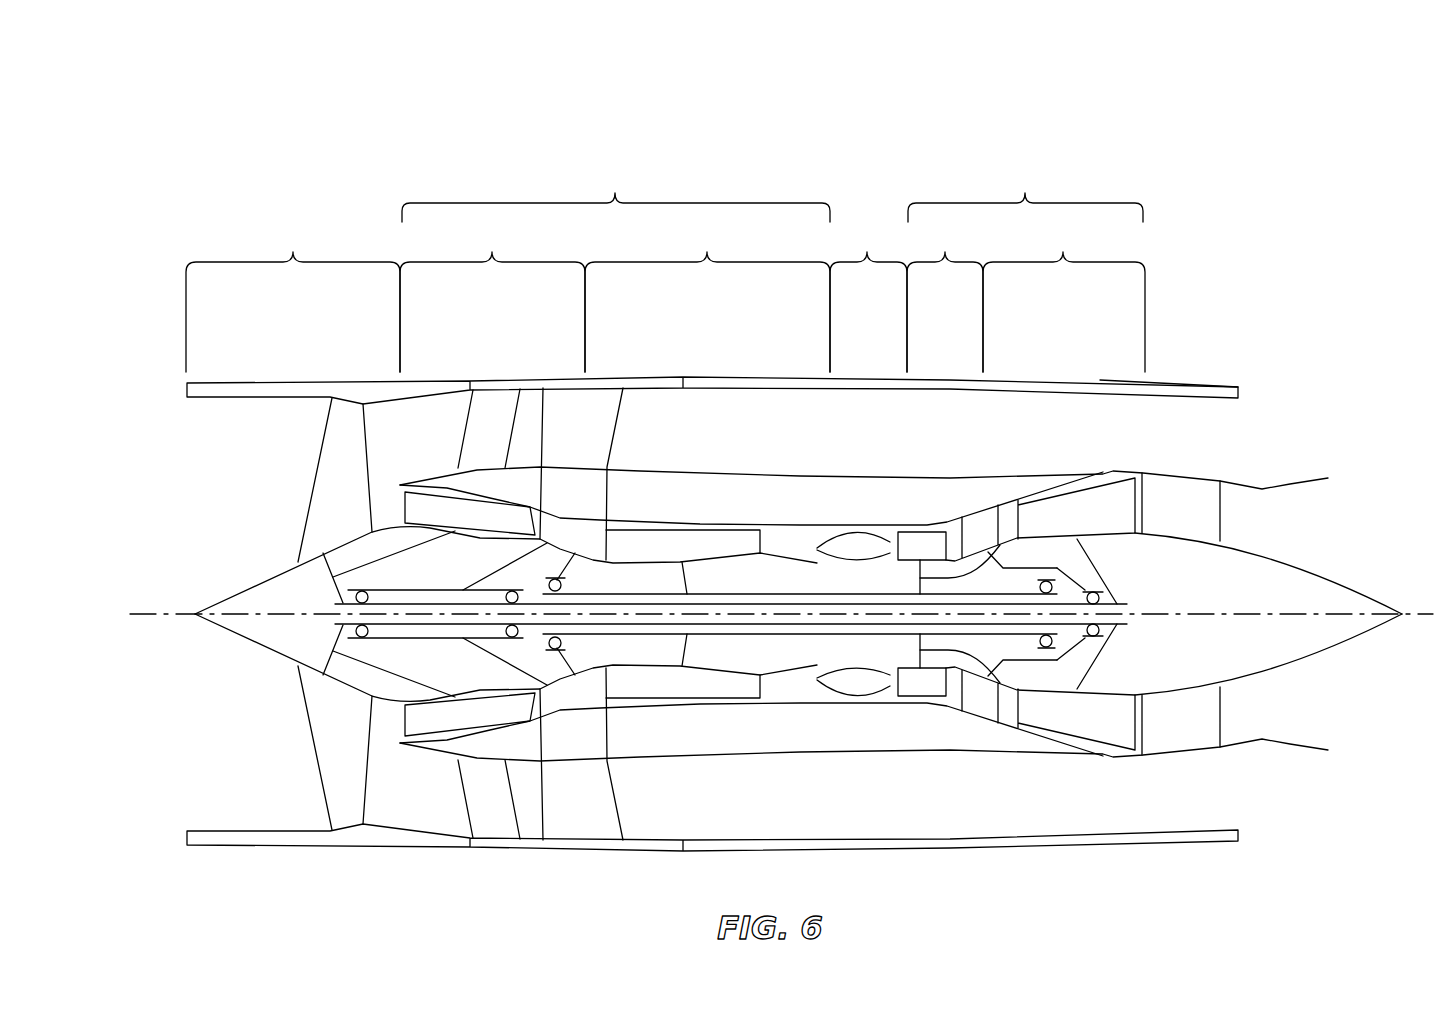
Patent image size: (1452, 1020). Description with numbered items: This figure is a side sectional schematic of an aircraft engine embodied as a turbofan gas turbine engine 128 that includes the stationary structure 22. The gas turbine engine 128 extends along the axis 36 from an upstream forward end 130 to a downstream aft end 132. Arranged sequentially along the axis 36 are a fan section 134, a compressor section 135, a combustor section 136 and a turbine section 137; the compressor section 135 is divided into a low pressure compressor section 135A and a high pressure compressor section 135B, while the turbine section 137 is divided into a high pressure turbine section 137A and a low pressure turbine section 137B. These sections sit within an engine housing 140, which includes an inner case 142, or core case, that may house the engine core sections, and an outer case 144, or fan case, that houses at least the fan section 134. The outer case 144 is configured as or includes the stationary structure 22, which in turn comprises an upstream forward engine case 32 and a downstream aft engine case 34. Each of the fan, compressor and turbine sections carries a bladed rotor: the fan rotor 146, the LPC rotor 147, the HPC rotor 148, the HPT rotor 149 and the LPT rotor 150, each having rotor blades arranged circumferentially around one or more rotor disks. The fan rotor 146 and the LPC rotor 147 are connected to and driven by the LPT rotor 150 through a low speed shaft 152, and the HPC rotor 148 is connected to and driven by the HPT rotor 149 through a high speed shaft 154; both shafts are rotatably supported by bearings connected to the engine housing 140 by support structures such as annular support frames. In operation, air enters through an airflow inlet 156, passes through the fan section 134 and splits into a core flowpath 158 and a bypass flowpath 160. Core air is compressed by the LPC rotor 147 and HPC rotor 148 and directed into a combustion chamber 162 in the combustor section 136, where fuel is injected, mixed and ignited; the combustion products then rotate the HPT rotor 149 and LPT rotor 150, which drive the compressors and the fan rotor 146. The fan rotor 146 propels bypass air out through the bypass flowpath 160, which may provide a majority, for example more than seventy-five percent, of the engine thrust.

The turbofan gas turbine engine 128 is at (1297, 136).
The forward end 130 is at (185, 391).
The aft end 132 is at (1402, 613).
The fan section 134 is at (293, 296).
The compressor section 135 is at (616, 194).
The low pressure compressor section 135A is at (492, 296).
The high pressure compressor section 135B is at (707, 296).
The combustor section 136 is at (868, 299).
The turbine section 137 is at (1025, 193).
The high pressure turbine section 137A is at (945, 299).
The low pressure turbine section 137B is at (1064, 297).
The engine housing 140 is at (1177, 347).
The stationary structure 22 is at (1198, 339).
The outer case 144 is at (1215, 382).
The inner case 142 is at (868, 470).
The fan rotor 146 is at (297, 522).
The LPC rotor 147 is at (403, 549).
The HPC rotor 148 is at (688, 580).
The HPT rotor 149 is at (985, 552).
The LPT rotor 150 is at (1083, 574).
The low speed shaft 152 is at (728, 626).
The high speed shaft 154 is at (803, 638).
The airflow inlet 156 is at (185, 468).
The core flowpath 158 is at (795, 541).
The bypass flowpath 160 is at (703, 440).
The combustion chamber 162 is at (852, 547).
The forward engine case 32 is at (501, 375).
The aft engine case 34 is at (718, 376).
The axis 36 is at (1425, 617).